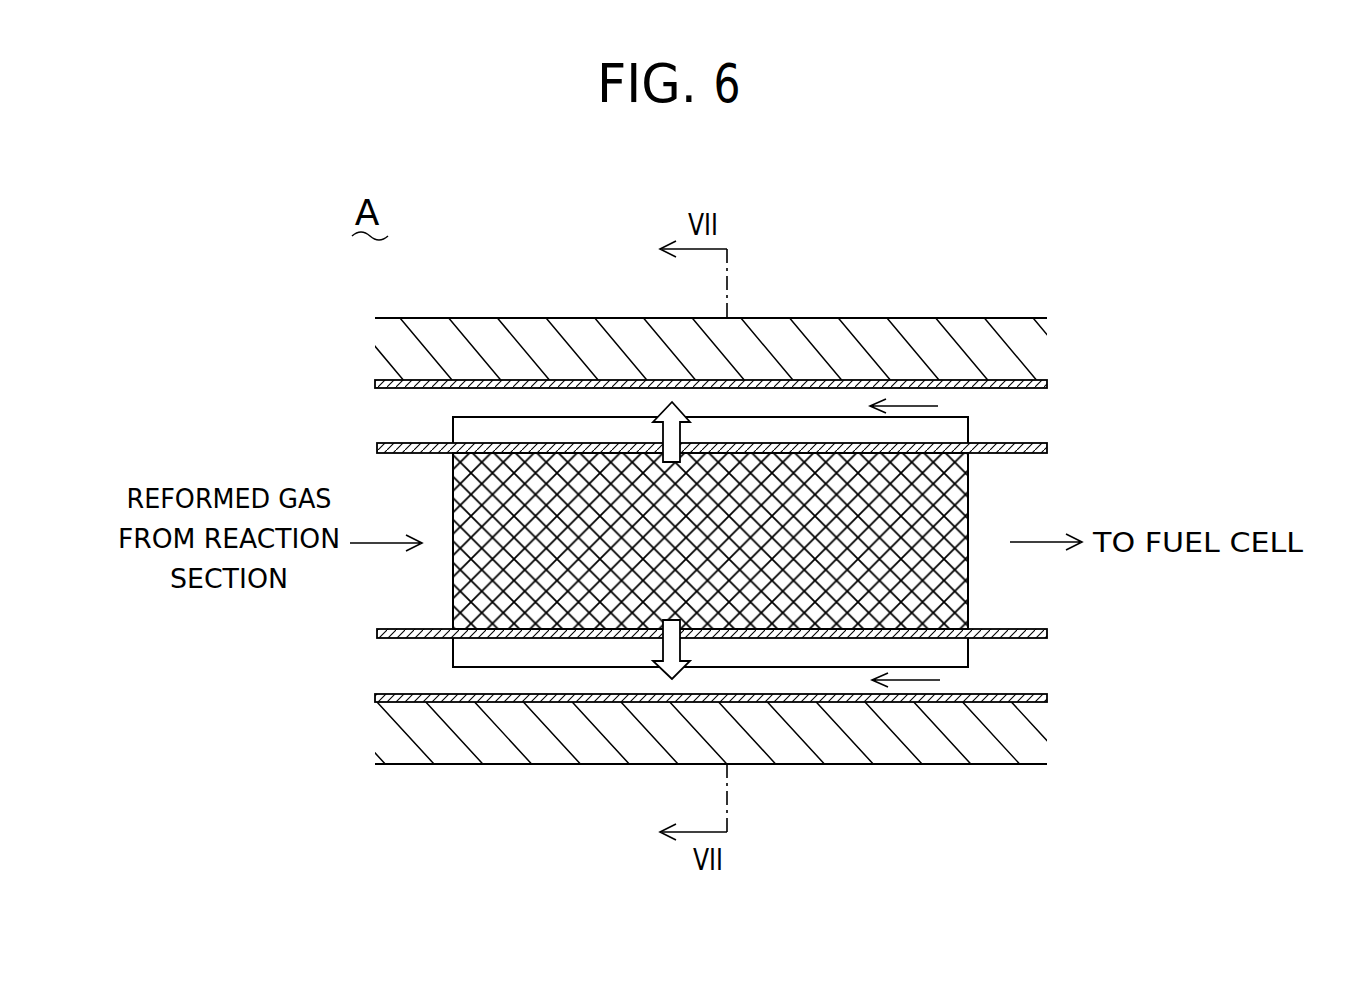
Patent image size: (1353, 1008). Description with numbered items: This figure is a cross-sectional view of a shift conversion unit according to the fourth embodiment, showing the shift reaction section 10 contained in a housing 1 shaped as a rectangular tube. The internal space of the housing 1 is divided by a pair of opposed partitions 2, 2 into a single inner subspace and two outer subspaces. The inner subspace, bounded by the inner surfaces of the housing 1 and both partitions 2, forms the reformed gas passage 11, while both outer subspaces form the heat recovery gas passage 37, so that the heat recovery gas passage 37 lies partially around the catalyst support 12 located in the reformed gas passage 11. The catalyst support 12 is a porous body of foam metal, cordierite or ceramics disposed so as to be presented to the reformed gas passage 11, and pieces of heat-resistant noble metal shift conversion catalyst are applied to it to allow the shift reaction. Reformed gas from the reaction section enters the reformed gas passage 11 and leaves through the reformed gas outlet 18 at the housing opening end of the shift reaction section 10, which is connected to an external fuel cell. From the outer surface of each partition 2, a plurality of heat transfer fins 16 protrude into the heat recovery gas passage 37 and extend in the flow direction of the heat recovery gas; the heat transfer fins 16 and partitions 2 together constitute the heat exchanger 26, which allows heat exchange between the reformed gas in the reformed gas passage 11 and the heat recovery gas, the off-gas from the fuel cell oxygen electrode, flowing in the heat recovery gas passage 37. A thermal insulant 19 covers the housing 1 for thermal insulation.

The housing 1 is at (795, 380).
The partition 2 is at (377, 447).
The shift reaction section 10 is at (548, 450).
The reformed gas passage 11 is at (432, 605).
The catalyst support 12 is at (770, 583).
The heat transfer fin 16 is at (618, 417).
The reformed gas outlet 18 is at (1031, 498).
The thermal insulant 19 is at (878, 740).
The heat exchanger 26 is at (849, 413).
The heat recovery gas passage 37 is at (1016, 418).